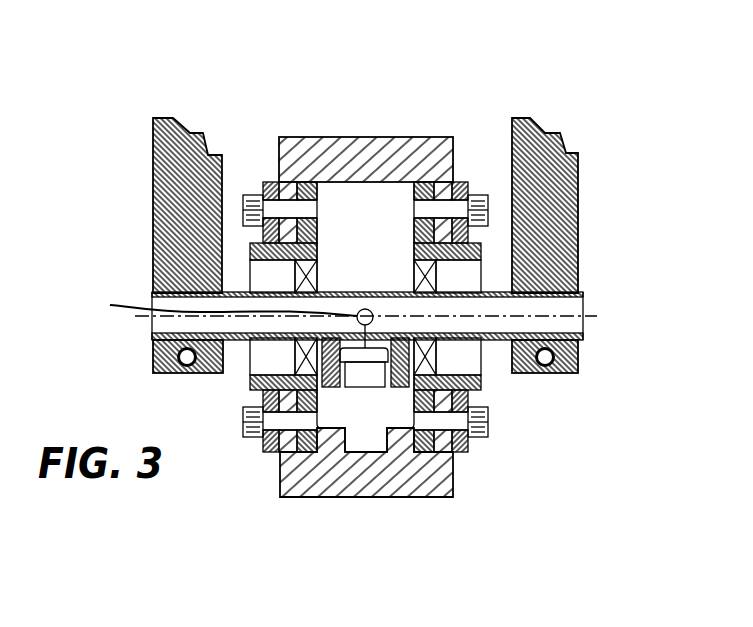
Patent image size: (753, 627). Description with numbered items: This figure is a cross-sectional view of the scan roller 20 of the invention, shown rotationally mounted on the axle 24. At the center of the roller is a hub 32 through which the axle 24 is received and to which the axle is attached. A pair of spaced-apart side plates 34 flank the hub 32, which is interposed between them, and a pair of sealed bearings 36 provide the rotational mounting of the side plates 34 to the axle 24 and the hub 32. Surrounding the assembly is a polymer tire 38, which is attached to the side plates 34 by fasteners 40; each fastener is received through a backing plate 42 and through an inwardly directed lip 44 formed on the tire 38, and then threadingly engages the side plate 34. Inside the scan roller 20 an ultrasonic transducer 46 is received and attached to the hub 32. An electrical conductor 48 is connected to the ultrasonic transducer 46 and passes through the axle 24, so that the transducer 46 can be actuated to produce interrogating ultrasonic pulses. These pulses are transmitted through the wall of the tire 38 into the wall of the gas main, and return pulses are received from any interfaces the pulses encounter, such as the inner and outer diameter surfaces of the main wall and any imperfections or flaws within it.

The scan roller 20 is at (357, 110).
The axle 24 is at (556, 304).
The hub 32 is at (398, 397).
The side plates 34 is at (249, 380).
The sealed bearings 36 is at (433, 277).
The polymer tire 38 is at (313, 140).
The fasteners 40 is at (478, 195).
The backing plate 42 is at (461, 192).
The inwardly directed lip 44 is at (442, 194).
The ultrasonic transducer 46 is at (333, 410).
The electrical conductor 48 is at (126, 310).